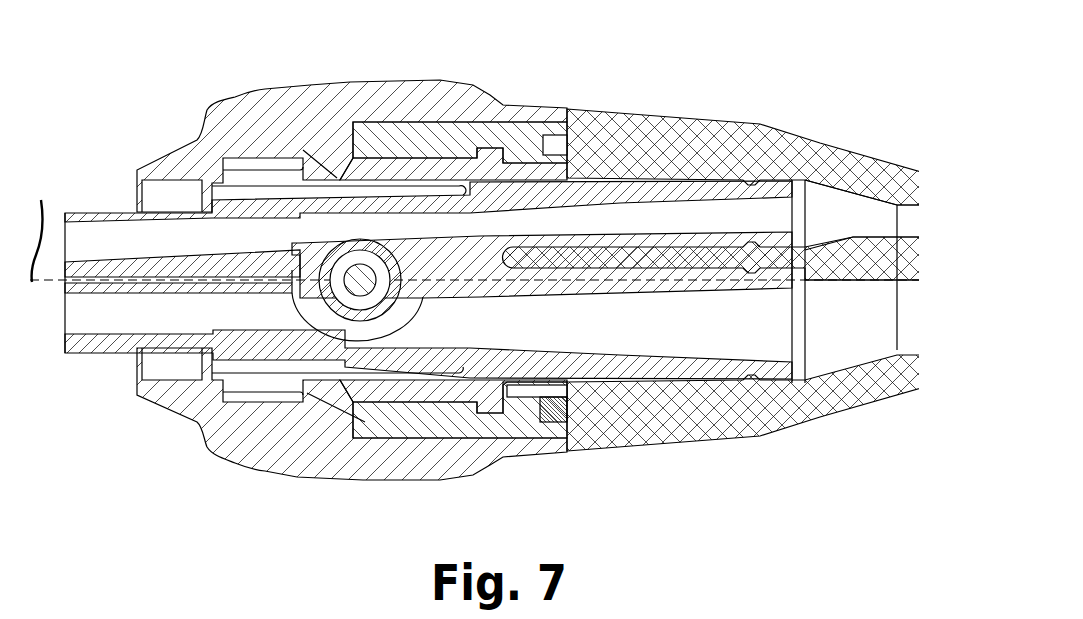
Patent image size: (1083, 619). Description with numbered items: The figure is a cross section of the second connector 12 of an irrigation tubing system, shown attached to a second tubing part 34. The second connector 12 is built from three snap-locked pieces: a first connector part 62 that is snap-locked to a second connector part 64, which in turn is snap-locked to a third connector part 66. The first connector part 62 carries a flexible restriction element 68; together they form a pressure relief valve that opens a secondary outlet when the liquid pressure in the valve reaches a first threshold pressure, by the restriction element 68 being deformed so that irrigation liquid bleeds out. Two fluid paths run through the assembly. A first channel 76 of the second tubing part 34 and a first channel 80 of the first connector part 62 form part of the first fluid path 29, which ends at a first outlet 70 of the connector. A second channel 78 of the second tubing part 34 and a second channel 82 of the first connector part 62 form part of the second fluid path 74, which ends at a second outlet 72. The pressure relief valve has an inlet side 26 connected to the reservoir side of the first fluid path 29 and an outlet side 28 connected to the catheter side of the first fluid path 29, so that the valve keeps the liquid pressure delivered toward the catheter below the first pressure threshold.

The second connector 12 is at (186, 84).
The inlet side 26 is at (787, 338).
The outlet side 28 is at (542, 281).
The first fluid path 29 is at (714, 397).
The second tubing part 34 is at (746, 443).
The first connector part 62 is at (595, 369).
The second connector part 64 is at (463, 420).
The third connector part 66 is at (213, 420).
The restriction element 68 is at (362, 276).
The first outlet 70 is at (63, 318).
The second outlet 72 is at (65, 232).
The second fluid path 74 is at (746, 191).
The first channel 76 is at (857, 340).
The second channel 78 is at (853, 212).
The first channel 80 is at (692, 330).
The second channel 82 is at (698, 215).